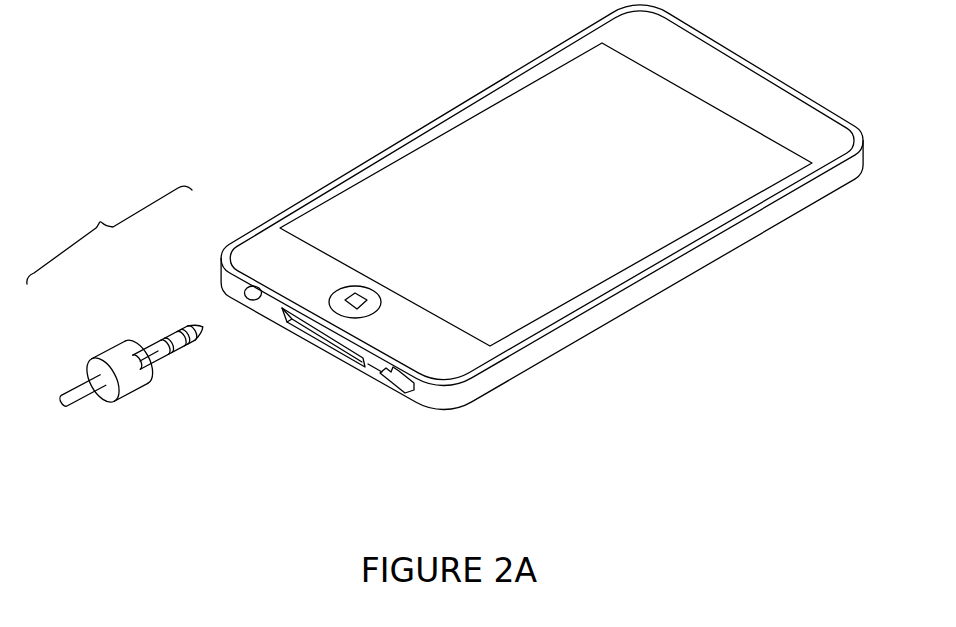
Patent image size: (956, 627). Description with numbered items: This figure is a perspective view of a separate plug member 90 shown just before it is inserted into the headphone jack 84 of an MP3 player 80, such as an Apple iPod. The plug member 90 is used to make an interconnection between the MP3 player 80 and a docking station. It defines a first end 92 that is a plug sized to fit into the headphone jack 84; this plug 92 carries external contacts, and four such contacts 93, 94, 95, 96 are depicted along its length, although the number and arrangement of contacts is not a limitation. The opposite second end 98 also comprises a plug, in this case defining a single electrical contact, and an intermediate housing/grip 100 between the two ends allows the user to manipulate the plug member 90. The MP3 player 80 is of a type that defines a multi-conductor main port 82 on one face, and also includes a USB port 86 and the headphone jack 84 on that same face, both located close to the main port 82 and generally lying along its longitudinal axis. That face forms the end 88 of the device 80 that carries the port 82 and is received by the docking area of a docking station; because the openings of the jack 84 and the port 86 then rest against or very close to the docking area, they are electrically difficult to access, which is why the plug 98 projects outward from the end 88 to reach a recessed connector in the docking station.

The MP3 player 80 is at (655, 284).
The multi-conductor main port 82 is at (318, 330).
The headphone jack 84 is at (250, 300).
The USB port 86 is at (392, 378).
The end of device 88 is at (376, 366).
The plug member 90 is at (109, 336).
The first end (plug) 92 is at (167, 320).
The contact 93 is at (200, 326).
The contact 94 is at (188, 343).
The contact 95 is at (172, 346).
The contact 96 is at (147, 360).
The second end (plug) 98 is at (80, 398).
The intermediate housing/grip 100 is at (110, 358).